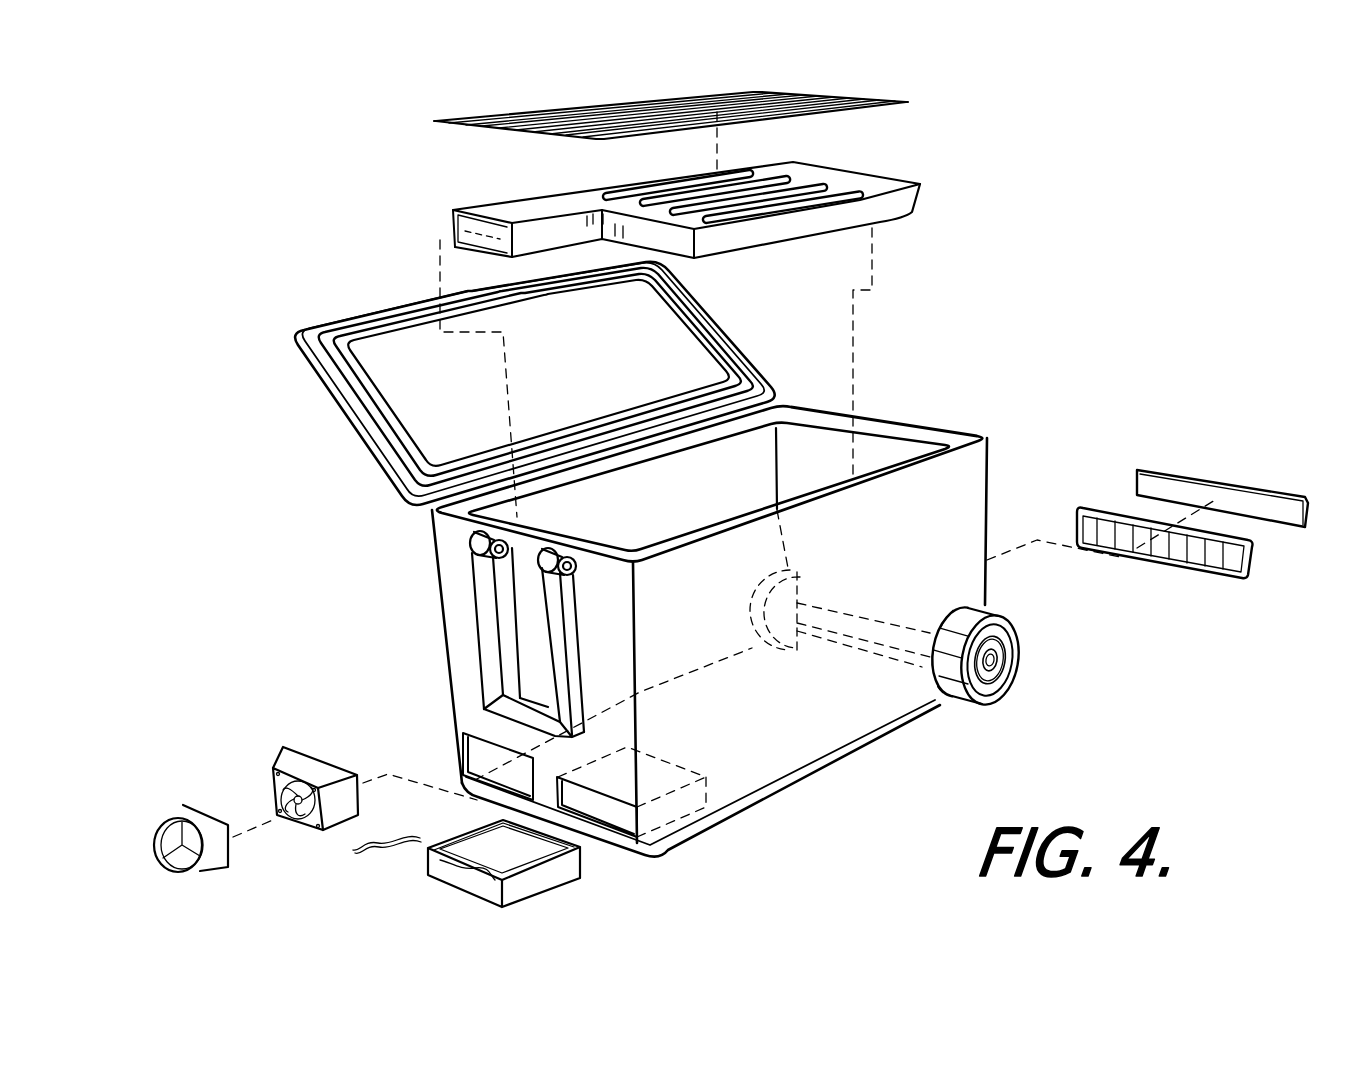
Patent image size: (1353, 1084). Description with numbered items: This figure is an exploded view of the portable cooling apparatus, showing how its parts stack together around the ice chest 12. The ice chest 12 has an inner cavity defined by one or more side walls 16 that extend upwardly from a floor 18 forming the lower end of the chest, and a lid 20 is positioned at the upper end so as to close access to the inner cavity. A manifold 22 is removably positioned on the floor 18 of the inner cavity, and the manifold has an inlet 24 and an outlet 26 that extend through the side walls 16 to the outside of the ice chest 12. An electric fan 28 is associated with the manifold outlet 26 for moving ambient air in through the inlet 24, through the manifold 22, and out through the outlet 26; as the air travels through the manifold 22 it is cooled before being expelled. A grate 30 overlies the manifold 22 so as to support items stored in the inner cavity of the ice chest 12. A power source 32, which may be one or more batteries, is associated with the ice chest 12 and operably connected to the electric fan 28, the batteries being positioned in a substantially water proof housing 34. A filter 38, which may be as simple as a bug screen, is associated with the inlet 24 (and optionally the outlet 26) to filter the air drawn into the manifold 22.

The ice chest 12 is at (432, 548).
The side walls 16 is at (943, 520).
The floor 18 is at (779, 718).
The lid 20 is at (664, 362).
The manifold 22 is at (925, 188).
The inlet 24 is at (1103, 498).
The outlet 26 is at (172, 840).
The electric fan 28 is at (308, 768).
The grate 30 is at (912, 103).
The power source 32 is at (511, 861).
The water proof housing 34 is at (678, 803).
The filter 38 is at (1183, 470).